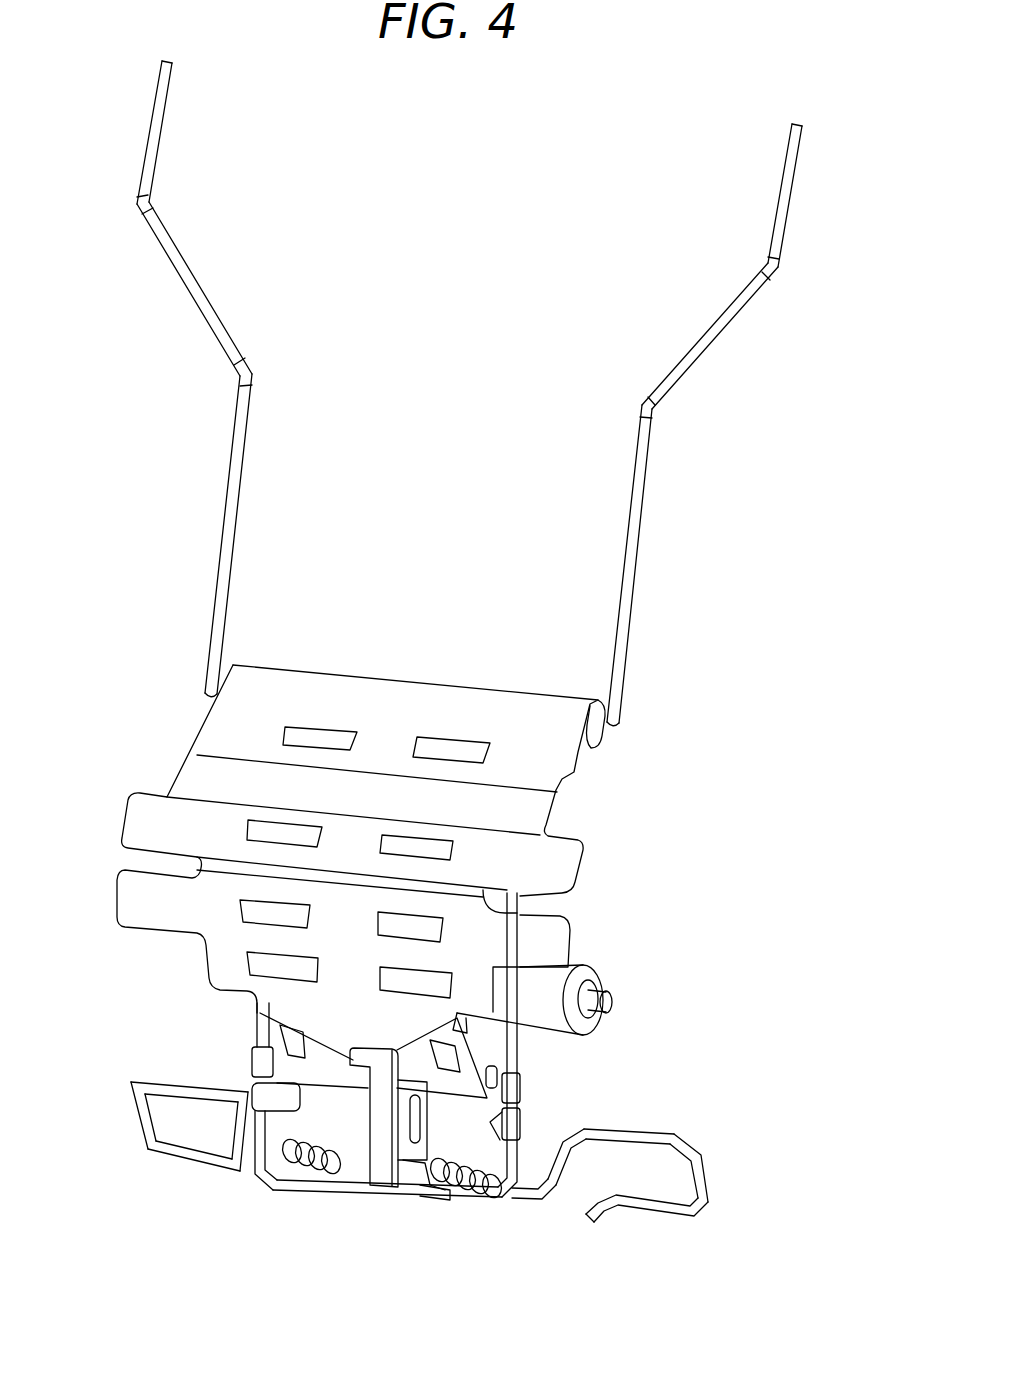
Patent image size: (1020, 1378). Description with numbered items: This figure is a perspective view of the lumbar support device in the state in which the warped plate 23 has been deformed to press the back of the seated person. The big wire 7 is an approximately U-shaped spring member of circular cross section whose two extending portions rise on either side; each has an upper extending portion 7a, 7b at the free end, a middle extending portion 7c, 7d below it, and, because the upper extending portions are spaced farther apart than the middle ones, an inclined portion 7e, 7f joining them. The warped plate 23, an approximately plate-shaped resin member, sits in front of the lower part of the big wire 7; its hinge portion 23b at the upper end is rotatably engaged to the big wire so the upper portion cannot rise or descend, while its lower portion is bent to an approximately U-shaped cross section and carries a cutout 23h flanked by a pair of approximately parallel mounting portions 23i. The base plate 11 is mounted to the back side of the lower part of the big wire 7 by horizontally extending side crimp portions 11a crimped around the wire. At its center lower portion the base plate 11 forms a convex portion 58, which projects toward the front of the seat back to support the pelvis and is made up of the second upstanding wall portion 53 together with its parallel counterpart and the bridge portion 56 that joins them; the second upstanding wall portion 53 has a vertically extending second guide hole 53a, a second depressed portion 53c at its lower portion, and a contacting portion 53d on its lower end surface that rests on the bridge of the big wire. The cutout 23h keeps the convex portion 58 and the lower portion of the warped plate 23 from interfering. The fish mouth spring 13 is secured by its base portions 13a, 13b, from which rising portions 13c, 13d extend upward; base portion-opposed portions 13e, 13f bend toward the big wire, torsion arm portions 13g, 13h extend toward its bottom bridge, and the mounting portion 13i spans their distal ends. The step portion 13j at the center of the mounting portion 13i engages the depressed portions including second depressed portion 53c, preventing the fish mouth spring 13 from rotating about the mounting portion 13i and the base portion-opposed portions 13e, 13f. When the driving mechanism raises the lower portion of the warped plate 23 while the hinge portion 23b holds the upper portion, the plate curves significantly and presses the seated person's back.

The big wire 7 is at (486, 393).
The upper extending portion 7a is at (160, 148).
The upper extending portion 7b is at (788, 222).
The middle extending portion 7c is at (250, 428).
The middle extending portion 7d is at (642, 494).
The inclined portion 7e is at (178, 264).
The inclined portion 7f is at (722, 348).
The base plate 11 is at (401, 1045).
The side crimp portion 11a is at (257, 1052).
The fish mouth spring 13 is at (414, 1156).
The base portion 13a is at (178, 1160).
The base portion 13b is at (646, 1208).
The rising portion 13c is at (138, 1128).
The rising portion 13d is at (700, 1175).
The base portion-opposed portion 13e is at (182, 1087).
The base portion-opposed portion 13f is at (607, 1134).
The torsion arm portion 13g is at (240, 1140).
The torsion arm portion 13h is at (565, 1178).
The mounting portion 13i is at (518, 1200).
The step portion 13j is at (432, 1192).
The warped plate 23 is at (387, 844).
The hinge portion 23b is at (580, 774).
The cutout 23h is at (345, 1055).
The mounting portion 23i is at (495, 1068).
The second upstanding wall portion 53 is at (428, 1182).
The second guide hole 53a is at (432, 1190).
The second depressed portion 53c is at (396, 1165).
The contacting portion 53d is at (418, 1173).
The bridge portion 56 is at (393, 1162).
The convex portion 58 is at (387, 1143).